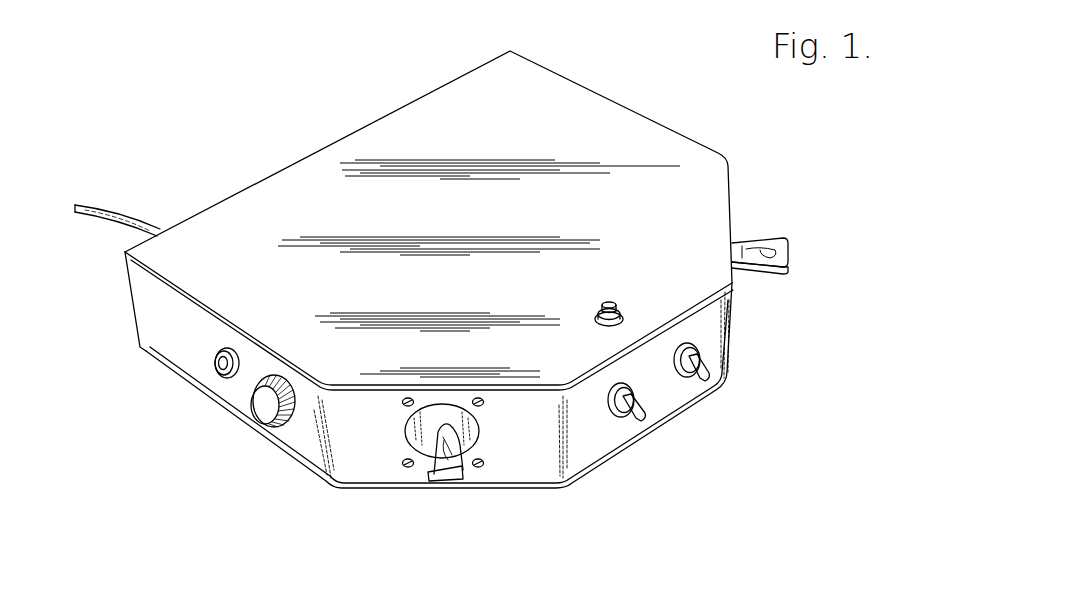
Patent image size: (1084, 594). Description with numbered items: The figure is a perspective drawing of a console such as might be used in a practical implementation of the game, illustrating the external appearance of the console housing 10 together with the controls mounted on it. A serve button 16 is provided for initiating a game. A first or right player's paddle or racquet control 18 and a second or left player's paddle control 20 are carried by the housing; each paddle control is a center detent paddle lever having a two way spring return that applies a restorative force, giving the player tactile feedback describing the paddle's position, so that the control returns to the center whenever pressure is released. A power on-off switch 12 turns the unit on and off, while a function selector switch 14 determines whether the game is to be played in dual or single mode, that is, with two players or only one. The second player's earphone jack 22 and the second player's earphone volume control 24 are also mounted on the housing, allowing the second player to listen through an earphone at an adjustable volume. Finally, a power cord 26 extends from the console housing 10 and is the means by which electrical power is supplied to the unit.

The console housing 10 is at (510, 134).
The power on-off switch 12 is at (638, 423).
The function selector switch 14 is at (697, 383).
The serve button 16 is at (616, 299).
The first or right player's paddle control 18 is at (786, 238).
The second or left player's paddle control 20 is at (430, 474).
The second player's earphone jack 22 is at (218, 377).
The second player's earphone volume control 24 is at (272, 420).
The power cord 26 is at (125, 213).